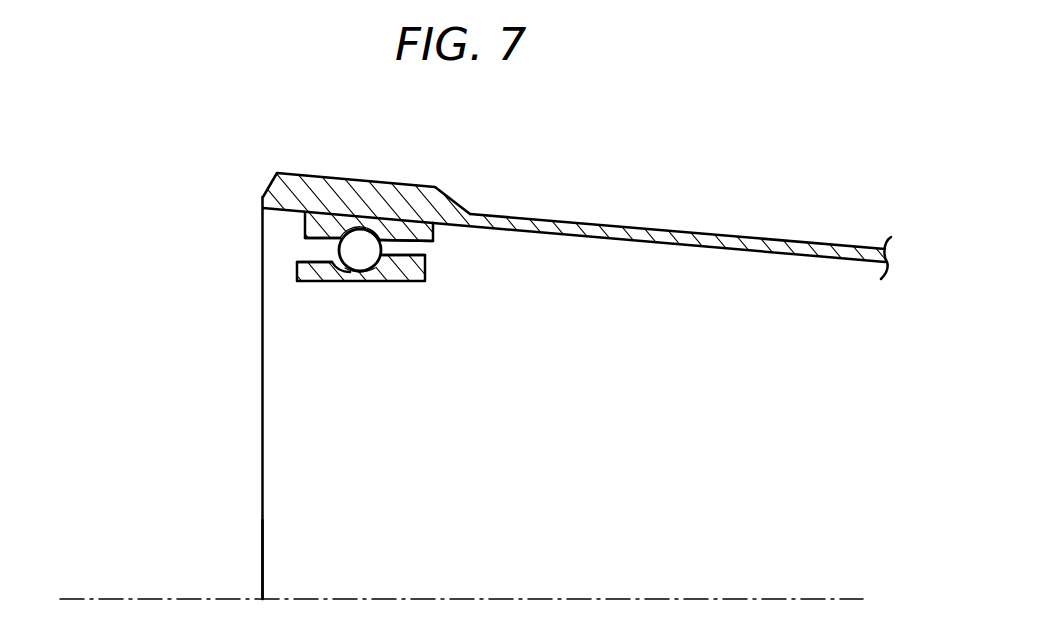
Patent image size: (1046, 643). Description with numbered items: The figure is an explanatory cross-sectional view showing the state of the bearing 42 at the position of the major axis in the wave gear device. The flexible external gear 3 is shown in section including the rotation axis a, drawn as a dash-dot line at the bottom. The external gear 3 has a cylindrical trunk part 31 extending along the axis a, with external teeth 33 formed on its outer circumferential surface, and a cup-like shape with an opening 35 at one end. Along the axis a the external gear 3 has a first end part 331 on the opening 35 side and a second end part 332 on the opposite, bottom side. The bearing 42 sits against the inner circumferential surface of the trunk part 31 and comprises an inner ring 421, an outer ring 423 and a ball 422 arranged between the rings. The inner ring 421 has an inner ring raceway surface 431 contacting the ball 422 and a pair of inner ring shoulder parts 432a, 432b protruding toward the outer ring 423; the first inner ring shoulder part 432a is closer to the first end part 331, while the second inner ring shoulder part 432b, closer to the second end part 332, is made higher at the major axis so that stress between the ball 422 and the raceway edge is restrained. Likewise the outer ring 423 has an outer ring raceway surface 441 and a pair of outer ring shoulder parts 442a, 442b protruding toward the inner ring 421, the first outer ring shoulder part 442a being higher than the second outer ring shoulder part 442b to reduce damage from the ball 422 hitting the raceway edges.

The external gear 3 is at (849, 207).
The trunk part 31 is at (690, 233).
The external teeth 33 is at (433, 187).
The opening 35 is at (262, 405).
The first end part 331 is at (260, 542).
The second end part 332 is at (866, 544).
The bearing 42 is at (182, 202).
The inner ring 421 is at (297, 270).
The ball 422 is at (339, 249).
The outer ring 423 is at (305, 220).
The inner ring raceway surface 431 is at (362, 268).
The first inner ring shoulder part 432a is at (305, 270).
The second inner ring shoulder part 432b is at (413, 268).
The outer ring raceway surface 441 is at (368, 232).
The first outer ring shoulder part 442a is at (322, 232).
The second outer ring shoulder part 442b is at (408, 232).
The rotation axis a is at (446, 592).